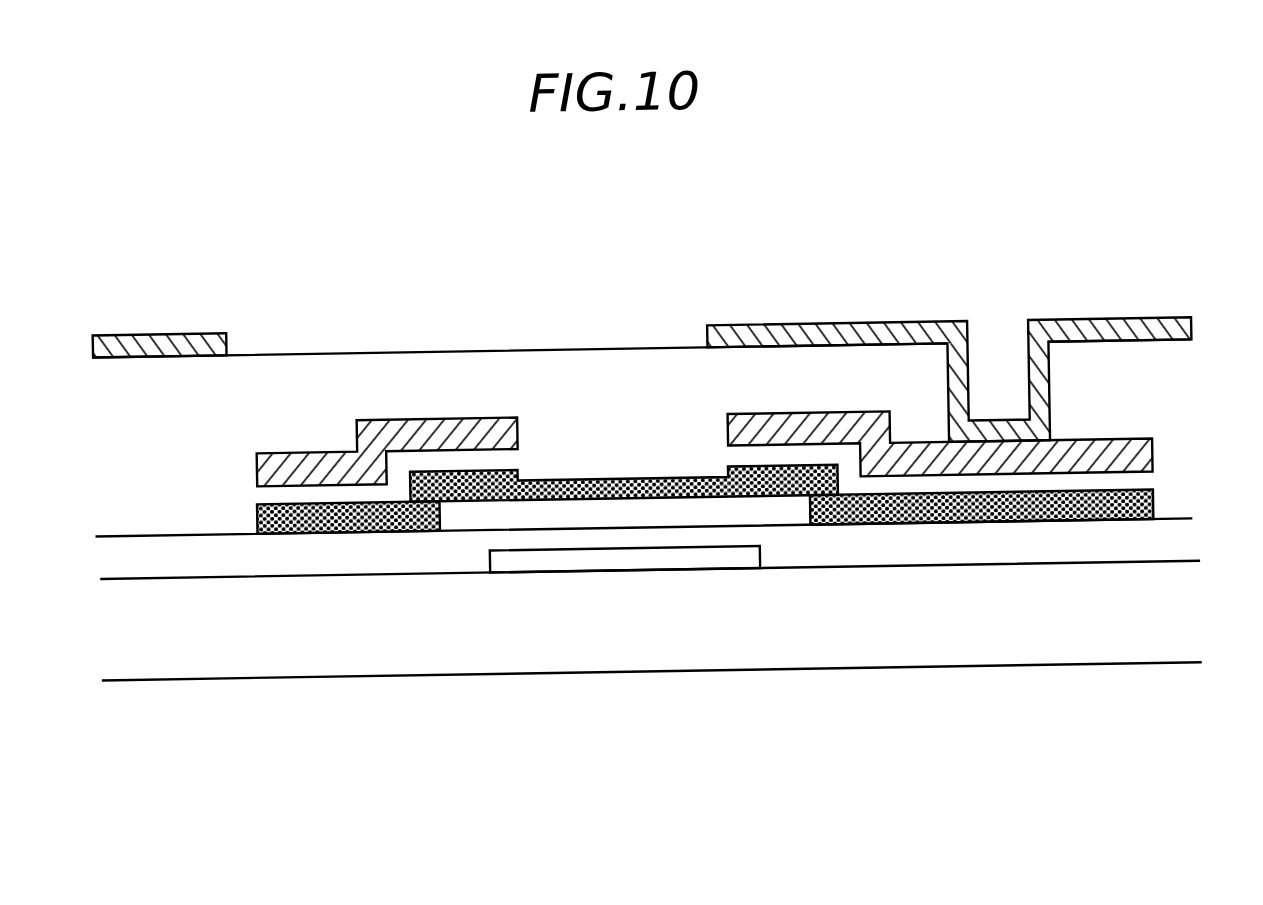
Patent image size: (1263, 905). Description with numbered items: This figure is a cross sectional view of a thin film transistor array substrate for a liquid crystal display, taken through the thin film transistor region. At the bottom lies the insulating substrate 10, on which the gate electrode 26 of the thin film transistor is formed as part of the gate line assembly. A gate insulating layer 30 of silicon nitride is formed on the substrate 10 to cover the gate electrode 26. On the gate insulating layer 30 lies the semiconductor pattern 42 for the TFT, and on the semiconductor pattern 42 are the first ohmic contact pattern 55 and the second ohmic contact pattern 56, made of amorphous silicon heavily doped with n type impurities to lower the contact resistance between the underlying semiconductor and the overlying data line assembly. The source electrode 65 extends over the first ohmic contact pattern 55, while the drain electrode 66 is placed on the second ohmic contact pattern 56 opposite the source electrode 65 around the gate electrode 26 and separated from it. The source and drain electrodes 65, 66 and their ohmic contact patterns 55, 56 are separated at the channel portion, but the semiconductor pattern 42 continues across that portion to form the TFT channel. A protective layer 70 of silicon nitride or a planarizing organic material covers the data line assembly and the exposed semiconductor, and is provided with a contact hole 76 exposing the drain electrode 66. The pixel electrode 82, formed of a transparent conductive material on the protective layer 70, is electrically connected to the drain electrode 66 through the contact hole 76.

The insulating substrate 10 is at (873, 651).
The gate electrode 26 is at (592, 554).
The gate insulating layer 30 is at (404, 559).
The semiconductor pattern 42 is at (987, 513).
The first ohmic contact pattern 55 is at (468, 462).
The second ohmic contact pattern 56 is at (768, 459).
The source electrode 65 is at (394, 417).
The drain electrode 66 is at (871, 422).
The protective layer 70 is at (612, 356).
The contact hole 76 is at (1008, 326).
The pixel electrode 82 is at (644, 339).